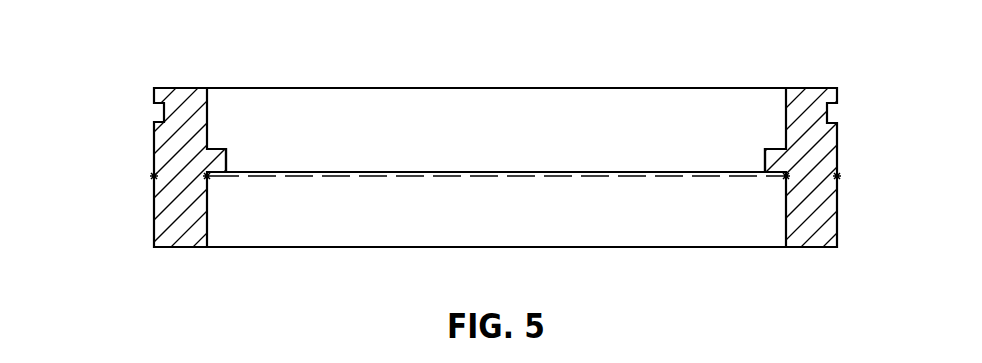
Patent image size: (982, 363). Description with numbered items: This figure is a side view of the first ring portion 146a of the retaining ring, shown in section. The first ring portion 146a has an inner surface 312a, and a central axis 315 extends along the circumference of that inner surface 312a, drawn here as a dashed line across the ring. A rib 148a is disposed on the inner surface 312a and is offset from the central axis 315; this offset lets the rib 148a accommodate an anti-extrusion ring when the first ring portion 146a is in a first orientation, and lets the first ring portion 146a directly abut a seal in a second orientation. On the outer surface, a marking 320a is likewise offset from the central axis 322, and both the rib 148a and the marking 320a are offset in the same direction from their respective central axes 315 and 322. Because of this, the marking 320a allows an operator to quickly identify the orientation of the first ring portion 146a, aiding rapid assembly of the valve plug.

The marking 320a is at (129, 110).
The first ring portion 146a is at (158, 216).
The rib 148a is at (228, 168).
The inner surface 312a is at (318, 105).
The central axis 315 is at (331, 176).
The central axis 322 is at (838, 176).